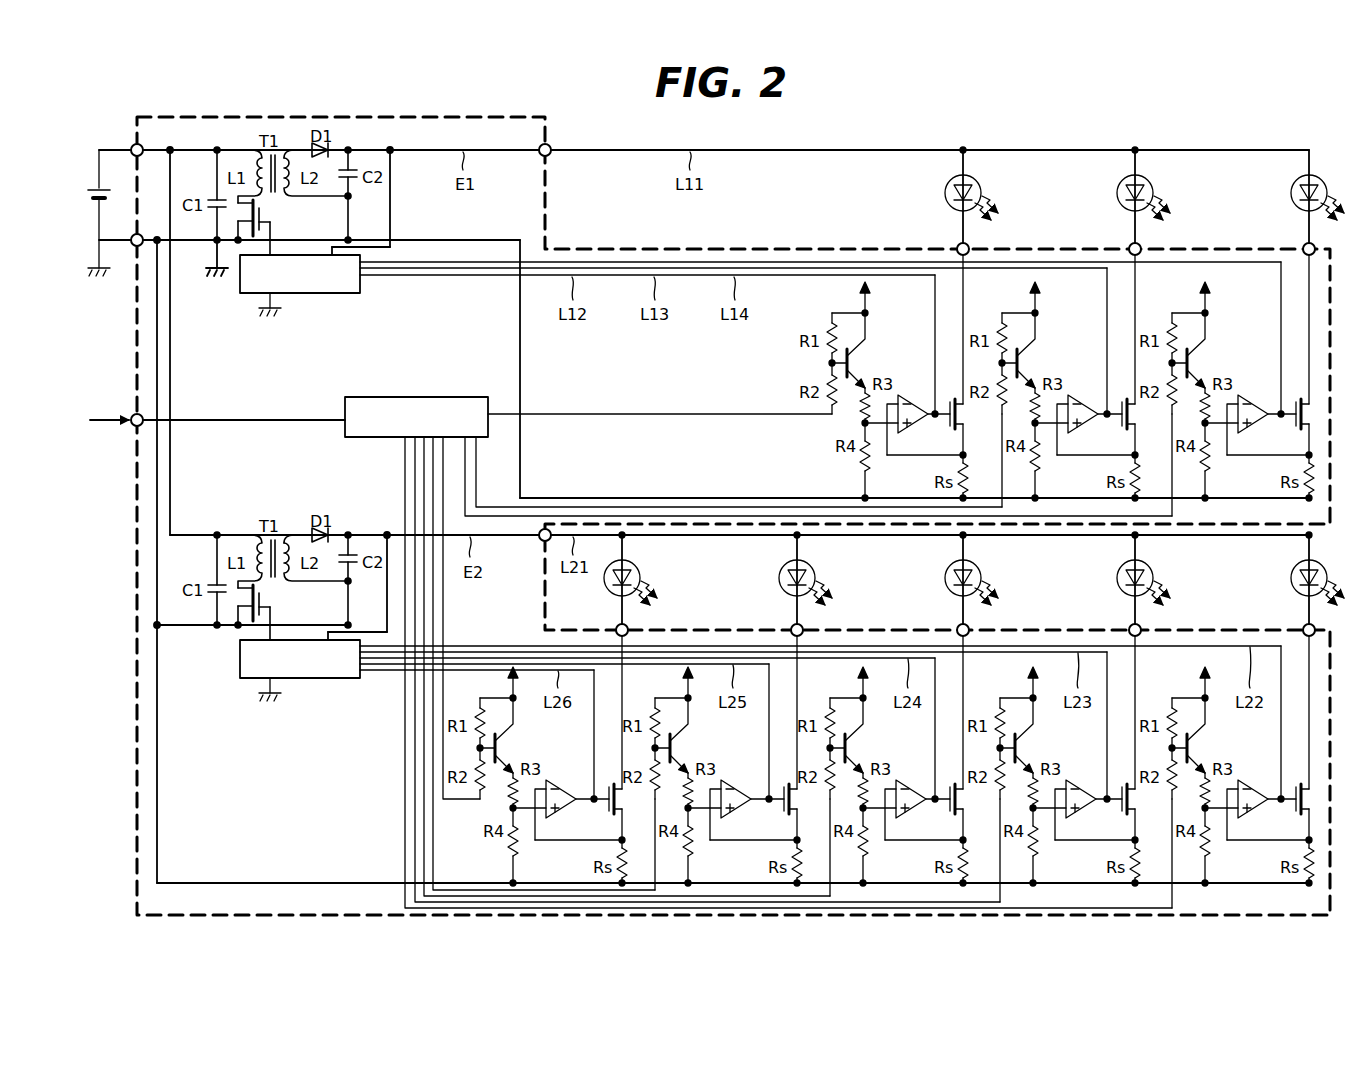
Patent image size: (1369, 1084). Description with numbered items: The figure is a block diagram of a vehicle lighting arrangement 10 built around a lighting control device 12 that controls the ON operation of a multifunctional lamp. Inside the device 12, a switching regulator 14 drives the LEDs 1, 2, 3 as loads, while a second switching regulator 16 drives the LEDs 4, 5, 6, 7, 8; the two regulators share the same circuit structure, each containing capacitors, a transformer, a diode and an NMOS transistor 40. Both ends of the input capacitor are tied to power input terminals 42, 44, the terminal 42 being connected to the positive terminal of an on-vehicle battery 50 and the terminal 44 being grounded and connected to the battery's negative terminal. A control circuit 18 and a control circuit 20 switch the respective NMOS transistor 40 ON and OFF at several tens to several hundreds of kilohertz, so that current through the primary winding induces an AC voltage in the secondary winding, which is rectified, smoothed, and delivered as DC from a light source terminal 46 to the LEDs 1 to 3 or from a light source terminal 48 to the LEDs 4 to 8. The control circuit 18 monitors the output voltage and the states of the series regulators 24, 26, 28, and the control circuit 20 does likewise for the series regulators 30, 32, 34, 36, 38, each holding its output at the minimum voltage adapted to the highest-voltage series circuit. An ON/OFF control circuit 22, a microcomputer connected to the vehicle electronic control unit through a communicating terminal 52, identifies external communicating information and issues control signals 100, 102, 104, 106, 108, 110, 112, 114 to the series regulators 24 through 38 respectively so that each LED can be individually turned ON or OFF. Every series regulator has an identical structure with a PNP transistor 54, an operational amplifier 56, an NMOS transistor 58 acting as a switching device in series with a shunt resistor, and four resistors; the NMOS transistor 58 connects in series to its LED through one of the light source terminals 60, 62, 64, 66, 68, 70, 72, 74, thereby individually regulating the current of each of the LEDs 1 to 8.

The LED lighting apparatus 10 is at (695, 486).
The lighting control device 12 is at (128, 658).
The switching regulator 14 is at (282, 195).
The switching regulator 16 is at (270, 597).
The control circuit 18 is at (322, 293).
The control circuit 20 is at (318, 679).
The ON/OFF control circuit 22 is at (408, 397).
The series regulator 24 is at (883, 358).
The series regulator 26 is at (1058, 290).
The series regulator 28 is at (1238, 288).
The series regulator 30 is at (562, 858).
The series regulator 32 is at (733, 858).
The series regulator 34 is at (910, 858).
The series regulator 36 is at (1073, 858).
The series regulator 38 is at (1243, 858).
The NMOS transistor 40 is at (270, 212).
The power input terminal 42 is at (131, 146).
The power input terminal 44 is at (132, 247).
The light source terminal 46 is at (549, 154).
The light source terminal 48 is at (541, 541).
The on-vehicle battery 50 is at (99, 188).
The communicating terminal 52 is at (131, 426).
The PNP transistor 54 is at (860, 363).
The operational amplifier 56 is at (912, 395).
The NMOS transistor 58 is at (944, 420).
The light source terminal 60 is at (957, 246).
The light source terminal 62 is at (1129, 246).
The light source terminal 64 is at (1303, 246).
The light source terminal 66 is at (616, 627).
The light source terminal 68 is at (791, 627).
The light source terminal 70 is at (957, 627).
The light source terminal 72 is at (1129, 627).
The light source terminal 74 is at (1303, 627).
The control signal 100 is at (666, 413).
The control signal 102 is at (606, 506).
The control signal 104 is at (698, 515).
The control signal 106 is at (443, 741).
The control signal 108 is at (433, 771).
The control signal 110 is at (424, 801).
The control signal 112 is at (415, 831).
The control signal 114 is at (405, 858).
The LED 1 is at (977, 183).
The LED 2 is at (1149, 183).
The LED 3 is at (1323, 183).
The LED 4 is at (636, 568).
The LED 5 is at (811, 568).
The LED 6 is at (977, 568).
The LED 7 is at (1149, 568).
The LED 8 is at (1323, 568).